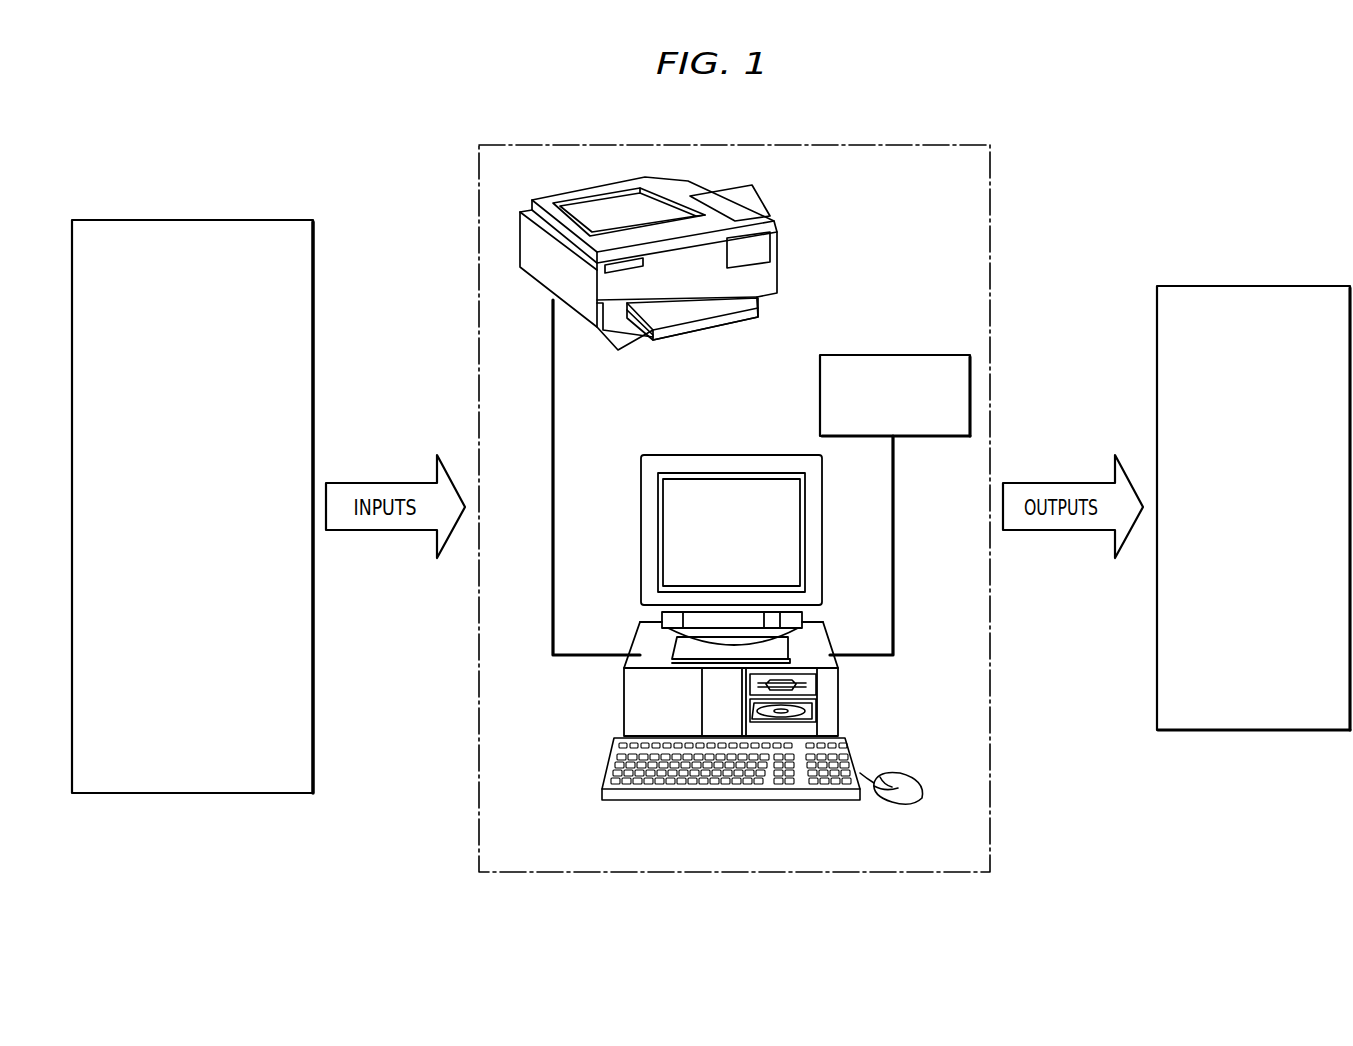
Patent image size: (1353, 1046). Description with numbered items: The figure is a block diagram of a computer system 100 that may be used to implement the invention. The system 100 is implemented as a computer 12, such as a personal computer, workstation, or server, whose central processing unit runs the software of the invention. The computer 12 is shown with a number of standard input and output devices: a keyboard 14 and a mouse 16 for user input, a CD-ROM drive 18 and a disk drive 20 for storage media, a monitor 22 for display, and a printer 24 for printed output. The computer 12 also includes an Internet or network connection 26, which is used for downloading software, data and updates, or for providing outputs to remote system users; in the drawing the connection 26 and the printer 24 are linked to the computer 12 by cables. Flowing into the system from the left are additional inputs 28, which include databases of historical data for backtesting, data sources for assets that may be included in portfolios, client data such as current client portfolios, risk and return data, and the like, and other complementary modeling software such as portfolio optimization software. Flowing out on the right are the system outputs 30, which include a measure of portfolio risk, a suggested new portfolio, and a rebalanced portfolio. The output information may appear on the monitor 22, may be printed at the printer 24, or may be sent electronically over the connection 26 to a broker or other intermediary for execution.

The computer system 100 is at (1036, 122).
The computer 12 is at (624, 714).
The keyboard 14 is at (720, 802).
The mouse 16 is at (906, 782).
The CD-ROM drive 18 is at (816, 720).
The disk drive 20 is at (812, 682).
The monitor 22 is at (728, 455).
The printer 24 is at (733, 213).
The Internet or network connection 26 is at (893, 355).
The additional inputs 28 is at (190, 220).
The system outputs 30 is at (1252, 286).